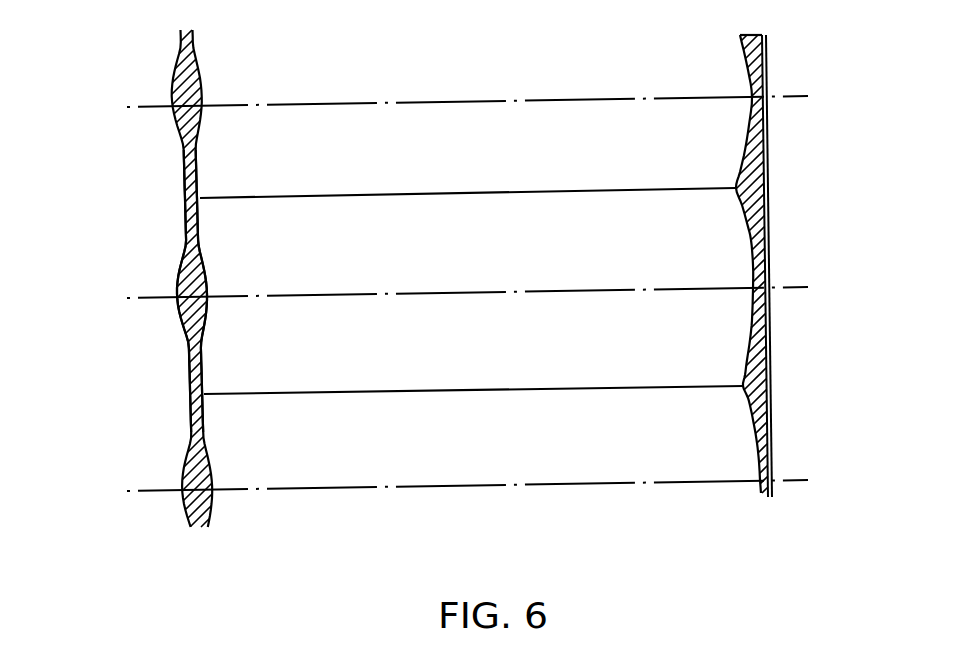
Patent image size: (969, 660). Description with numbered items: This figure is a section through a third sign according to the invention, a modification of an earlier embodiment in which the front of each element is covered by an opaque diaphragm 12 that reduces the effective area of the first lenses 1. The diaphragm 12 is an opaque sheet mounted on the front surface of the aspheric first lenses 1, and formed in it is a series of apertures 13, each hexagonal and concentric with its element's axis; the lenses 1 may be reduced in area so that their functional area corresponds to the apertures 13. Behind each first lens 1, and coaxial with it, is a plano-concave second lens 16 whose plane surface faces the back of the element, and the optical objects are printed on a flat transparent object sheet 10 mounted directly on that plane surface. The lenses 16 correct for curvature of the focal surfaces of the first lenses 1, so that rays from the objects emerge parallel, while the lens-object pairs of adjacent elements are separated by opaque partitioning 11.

The first lens 1 is at (183, 280).
The aperture 13 is at (183, 280).
The opaque diaphragm 12 is at (185, 188).
The opaque partitioning 11 is at (485, 193).
The object sheet 10 is at (763, 242).
The second lens 16 is at (770, 343).